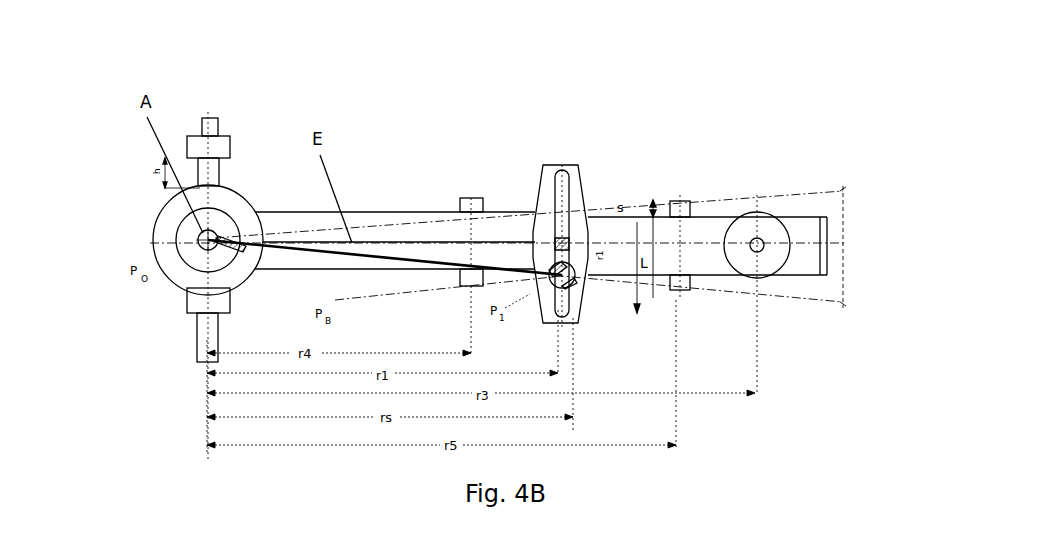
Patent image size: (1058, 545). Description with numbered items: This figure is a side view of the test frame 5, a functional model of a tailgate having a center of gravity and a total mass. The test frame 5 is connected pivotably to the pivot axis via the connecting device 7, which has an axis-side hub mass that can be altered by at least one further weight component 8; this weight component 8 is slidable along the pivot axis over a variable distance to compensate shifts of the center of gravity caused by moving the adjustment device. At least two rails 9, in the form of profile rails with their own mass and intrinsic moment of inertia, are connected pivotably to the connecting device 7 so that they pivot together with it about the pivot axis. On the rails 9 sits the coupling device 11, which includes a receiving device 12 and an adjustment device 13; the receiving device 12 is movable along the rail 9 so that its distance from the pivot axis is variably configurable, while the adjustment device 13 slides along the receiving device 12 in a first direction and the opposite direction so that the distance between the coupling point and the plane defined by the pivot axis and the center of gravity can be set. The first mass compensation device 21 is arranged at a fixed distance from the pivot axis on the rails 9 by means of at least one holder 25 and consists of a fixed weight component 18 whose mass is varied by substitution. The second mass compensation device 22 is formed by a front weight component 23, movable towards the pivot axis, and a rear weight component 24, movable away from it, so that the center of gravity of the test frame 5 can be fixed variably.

The test frame 5 is at (288, 100).
The connecting device 7 is at (208, 262).
The further weight component 8 is at (215, 147).
The rail 9 is at (390, 232).
The coupling device 11 is at (613, 268).
The receiving device 12 is at (573, 197).
The adjustment device 13 is at (567, 283).
The weight component 18 is at (760, 268).
The first mass compensation device 21 is at (729, 272).
The second mass compensation device 22 is at (585, 236).
The front weight component 23 is at (462, 283).
The rear weight component 24 is at (683, 203).
The holder 25 is at (761, 242).